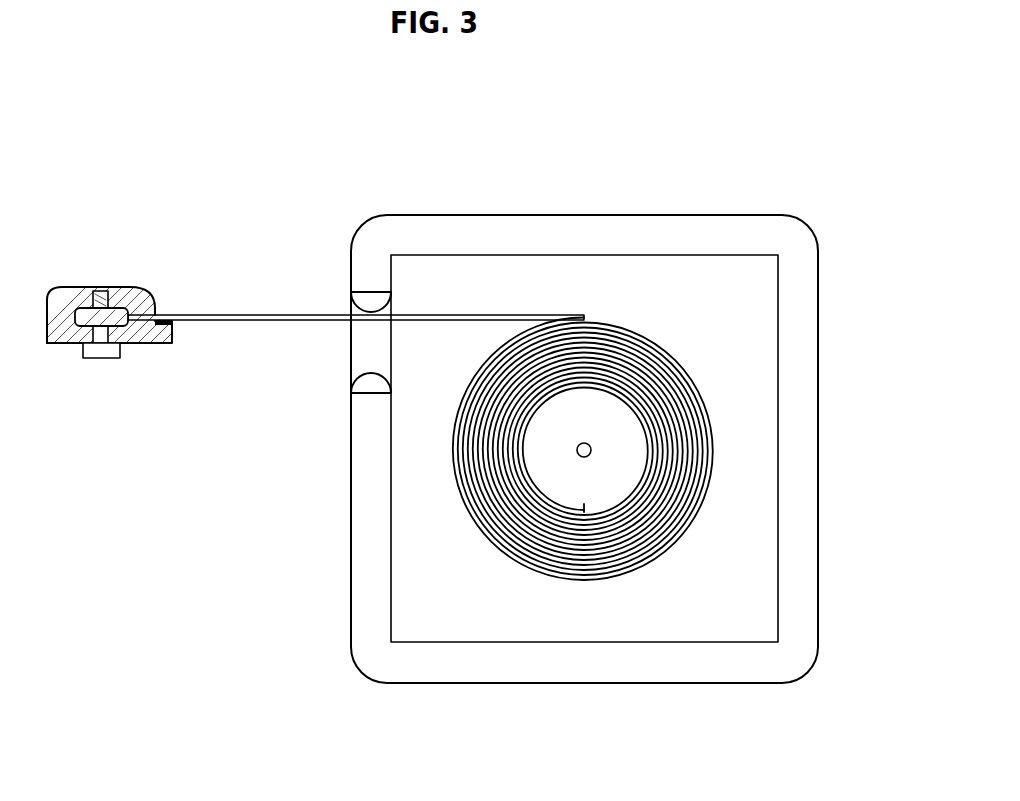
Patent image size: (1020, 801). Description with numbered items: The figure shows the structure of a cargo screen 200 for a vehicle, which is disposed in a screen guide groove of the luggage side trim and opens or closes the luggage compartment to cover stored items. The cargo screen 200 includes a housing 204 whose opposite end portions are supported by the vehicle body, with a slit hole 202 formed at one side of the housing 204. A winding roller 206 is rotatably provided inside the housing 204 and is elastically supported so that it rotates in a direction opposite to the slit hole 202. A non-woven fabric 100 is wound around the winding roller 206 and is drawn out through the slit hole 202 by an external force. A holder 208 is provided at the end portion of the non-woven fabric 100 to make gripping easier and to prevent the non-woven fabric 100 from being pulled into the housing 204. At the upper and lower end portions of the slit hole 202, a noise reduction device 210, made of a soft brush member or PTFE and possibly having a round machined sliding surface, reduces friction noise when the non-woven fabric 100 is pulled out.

The non-woven fabric 100 is at (228, 317).
The cargo screen 200 is at (562, 390).
The slit hole 202 is at (373, 358).
The housing 204 is at (562, 228).
The winding roller 206 is at (628, 458).
The holder 208 is at (68, 274).
The noise reduction device 210 is at (358, 302).